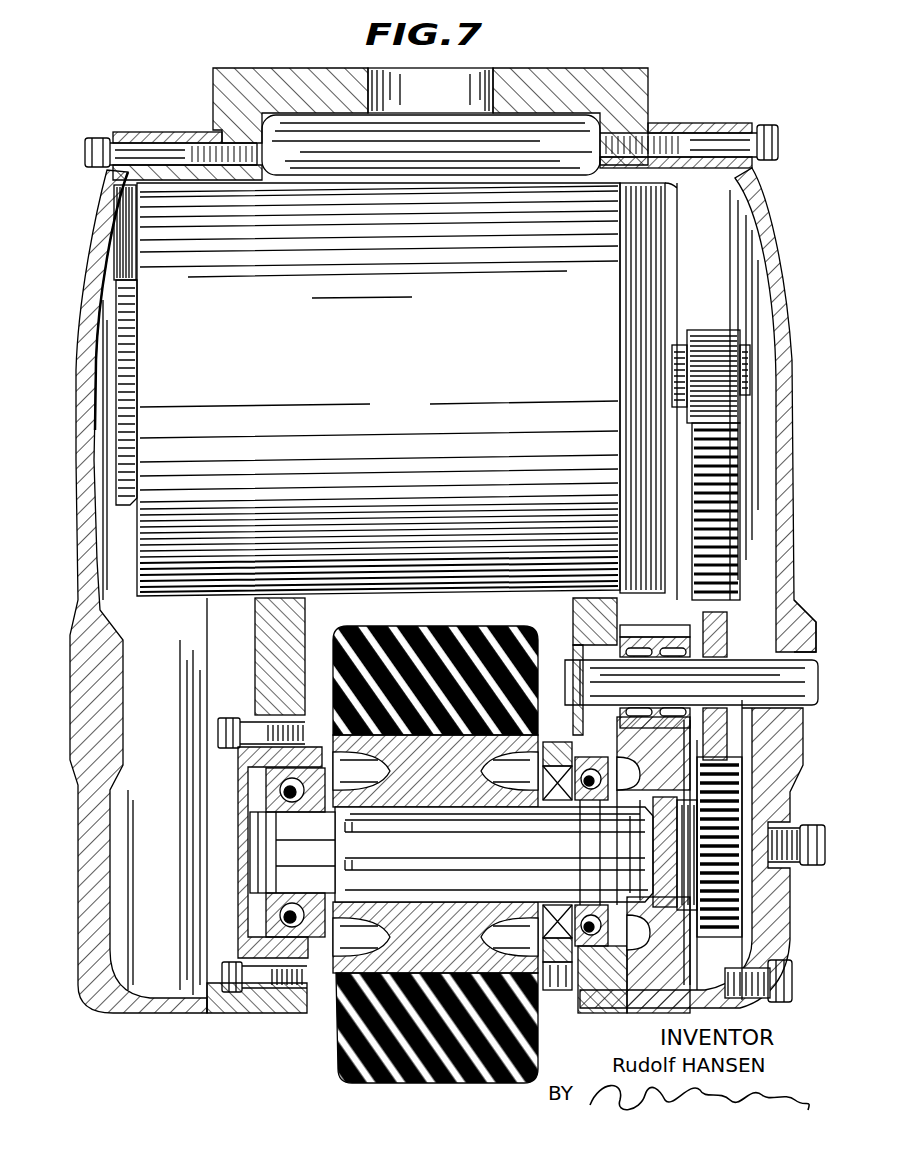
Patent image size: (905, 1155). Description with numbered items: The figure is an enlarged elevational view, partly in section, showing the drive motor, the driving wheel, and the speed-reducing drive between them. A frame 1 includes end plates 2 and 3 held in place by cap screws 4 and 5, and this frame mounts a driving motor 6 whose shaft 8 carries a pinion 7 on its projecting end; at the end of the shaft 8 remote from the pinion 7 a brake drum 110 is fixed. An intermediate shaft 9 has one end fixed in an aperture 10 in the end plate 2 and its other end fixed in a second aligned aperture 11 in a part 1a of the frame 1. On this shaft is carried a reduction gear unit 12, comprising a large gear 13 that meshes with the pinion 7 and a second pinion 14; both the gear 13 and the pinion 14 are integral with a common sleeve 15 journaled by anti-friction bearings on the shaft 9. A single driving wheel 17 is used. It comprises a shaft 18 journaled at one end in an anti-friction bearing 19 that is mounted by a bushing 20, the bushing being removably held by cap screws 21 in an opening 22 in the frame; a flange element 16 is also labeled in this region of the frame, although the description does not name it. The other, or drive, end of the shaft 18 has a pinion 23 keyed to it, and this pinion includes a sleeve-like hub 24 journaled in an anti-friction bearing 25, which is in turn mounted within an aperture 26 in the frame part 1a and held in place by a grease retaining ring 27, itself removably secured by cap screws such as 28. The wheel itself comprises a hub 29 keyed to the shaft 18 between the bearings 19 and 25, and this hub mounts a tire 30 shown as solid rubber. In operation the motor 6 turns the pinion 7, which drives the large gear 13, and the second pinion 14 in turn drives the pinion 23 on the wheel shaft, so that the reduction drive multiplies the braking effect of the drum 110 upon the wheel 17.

The frame 1 is at (633, 78).
The part of frame 1a is at (582, 612).
The end plate 2 is at (769, 256).
The end plate 3 is at (96, 232).
The cap screw 4 is at (765, 133).
The cap screw 5 is at (98, 140).
The driving motor 6 is at (397, 368).
The pinion 7 is at (712, 333).
The shaft 8 is at (751, 370).
The intermediate shaft 9 is at (796, 690).
The aperture 10 is at (806, 626).
The second aligned aperture 11 is at (575, 668).
The reduction gear unit 12 is at (745, 793).
The large gear 13 is at (735, 922).
The second pinion 14 is at (646, 640).
The common sleeve 15 is at (672, 640).
The flange 16 is at (256, 630).
The driving wheel 17 is at (334, 1072).
The shaft 18 is at (432, 884).
The anti-friction bearing 19 is at (275, 790).
The bushing 20 is at (240, 842).
The cap screw 21 is at (233, 716).
The opening 22 is at (322, 960).
The pinion 23 is at (650, 955).
The sleeve-like hub 24 is at (628, 800).
The anti-friction bearing 25 is at (600, 760).
The aperture 26 is at (606, 962).
The grease retaining ring 27 is at (555, 740).
The cap screw 28 is at (560, 990).
The hub 29 is at (447, 784).
The tire 30 is at (396, 1075).
The brake drum 110 is at (128, 505).